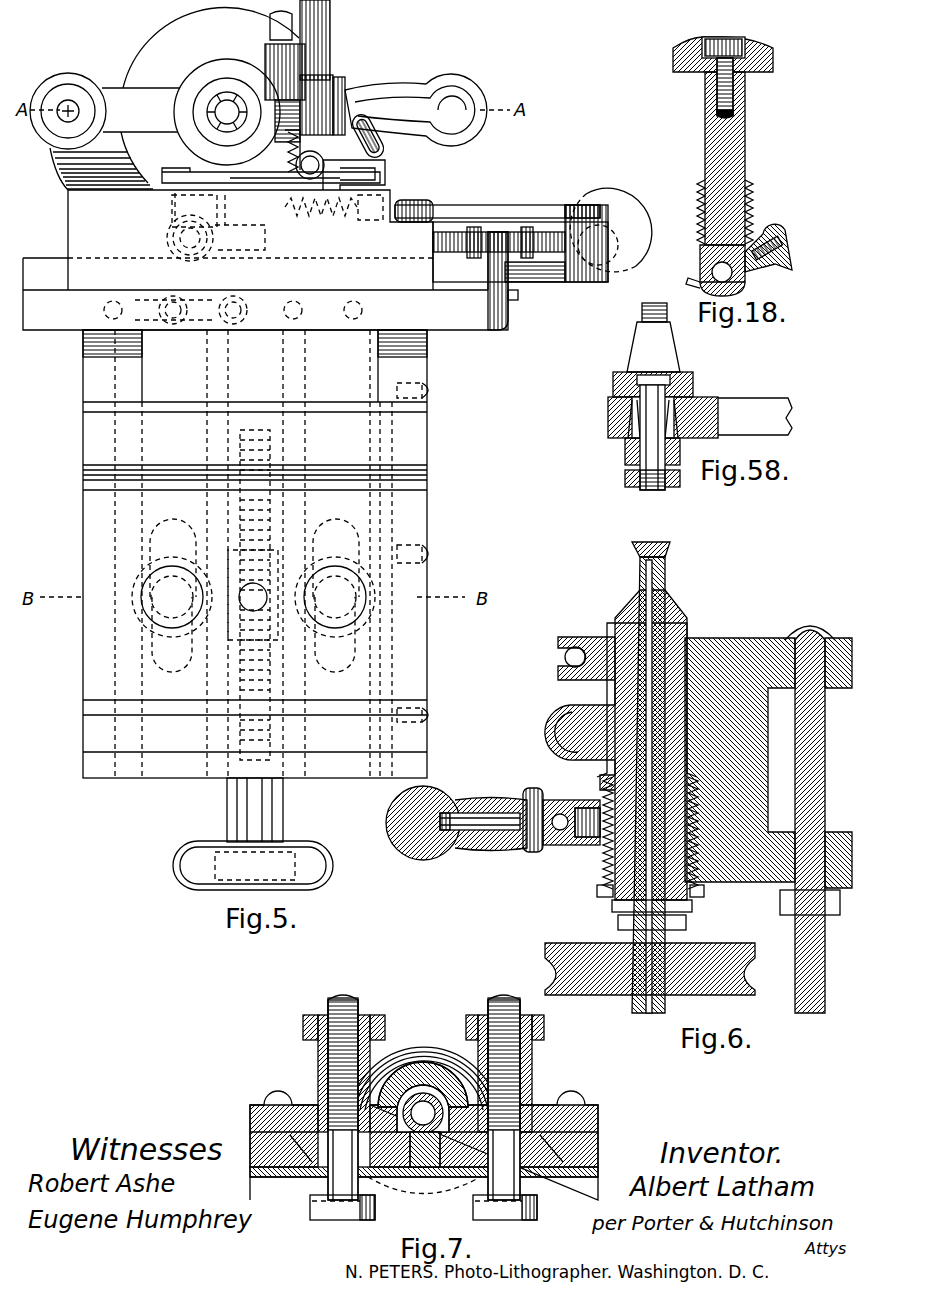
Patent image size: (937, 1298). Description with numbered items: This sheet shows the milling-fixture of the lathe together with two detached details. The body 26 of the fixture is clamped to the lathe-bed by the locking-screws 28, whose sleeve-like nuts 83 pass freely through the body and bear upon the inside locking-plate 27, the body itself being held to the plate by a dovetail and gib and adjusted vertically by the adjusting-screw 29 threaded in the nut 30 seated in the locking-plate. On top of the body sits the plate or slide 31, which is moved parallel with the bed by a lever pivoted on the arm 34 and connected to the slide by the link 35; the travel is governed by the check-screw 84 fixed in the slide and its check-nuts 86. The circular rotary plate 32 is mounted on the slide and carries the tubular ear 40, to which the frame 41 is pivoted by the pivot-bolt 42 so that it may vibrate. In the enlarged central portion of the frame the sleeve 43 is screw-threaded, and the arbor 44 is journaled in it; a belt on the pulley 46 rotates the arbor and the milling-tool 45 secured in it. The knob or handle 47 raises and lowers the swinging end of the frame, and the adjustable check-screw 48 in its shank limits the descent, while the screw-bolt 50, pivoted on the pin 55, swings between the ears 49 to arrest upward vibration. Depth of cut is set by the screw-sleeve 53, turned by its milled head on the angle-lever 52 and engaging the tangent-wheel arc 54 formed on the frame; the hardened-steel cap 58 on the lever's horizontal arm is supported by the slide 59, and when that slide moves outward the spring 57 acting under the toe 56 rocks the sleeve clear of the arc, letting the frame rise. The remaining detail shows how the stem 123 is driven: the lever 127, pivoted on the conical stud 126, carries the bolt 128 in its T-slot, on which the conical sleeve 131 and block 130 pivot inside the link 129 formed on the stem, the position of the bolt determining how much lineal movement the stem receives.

In FIG. 5, the body of the milling-fixture 26 is at (255, 537).
In FIG. 7, the body of the milling-fixture 26 is at (422, 1144).
In FIG. 5, the locking-plate 27 is at (266, 595).
In FIG. 7, the locking-plate 27 is at (424, 1107).
In FIG. 5, the locking-screws 28 is at (253, 595).
In FIG. 7, the locking-screws 28 is at (423, 1207).
In FIG. 5, the adjusting-screw 29 is at (253, 834).
In FIG. 7, the nut 30 is at (424, 1188).
In FIG. 5, the plate or slide 31 is at (270, 260).
In FIG. 5, the circular rotary plate 32 is at (250, 240).
In FIG. 5, the arm 34 is at (520, 252).
In FIG. 5, the link 35 is at (497, 205).
In FIG. 5, the tubular ear 40 is at (101, 169).
In FIG. 5, the frame 41 is at (200, 95).
In FIG. 6, the frame 41 is at (768, 776).
In FIG. 5, the pivot-bolt 42 is at (68, 111).
In FIG. 6, the pivot-bolt 42 is at (817, 819).
In FIG. 6, the sleeve 43 is at (643, 853).
In FIG. 6, the arbor 44 is at (655, 745).
In FIG. 5, the milling-tool 45 is at (227, 112).
In FIG. 6, the milling-tool 45 is at (651, 768).
In FIG. 6, the pulley 46 is at (650, 959).
In FIG. 5, the knob or handle 47 is at (416, 110).
In FIG. 6, the knob or handle 47 is at (478, 808).
In FIG. 6, the adjustable check-screw 48 is at (561, 815).
In FIG. 5, the ears 49 is at (296, 139).
In FIG. 6, the ears 49 is at (560, 637).
In FIG. 6, the screw-bolt 50 is at (565, 657).
In FIG. 5, the angle-lever 52 is at (331, 5).
In FIG. 18, the angle-lever 52 is at (705, 252).
In FIG. 5, the screw-sleeve 53 is at (336, 88).
In FIG. 18, the screw-sleeve 53 is at (705, 104).
In FIG. 5, the tangent-wheel arc 54 is at (281, 152).
In FIG. 6, the tangent-wheel arc 54 is at (583, 740).
In FIG. 5, the pin 55 is at (310, 165).
In FIG. 18, the pin 55 is at (732, 279).
In FIG. 5, the toe 56 is at (285, 167).
In FIG. 18, the toe 56 is at (684, 278).
In FIG. 5, the spring 57 is at (271, 166).
In FIG. 5, the hardened-steel cap 58 is at (375, 135).
In FIG. 18, the hardened-steel cap 58 is at (776, 243).
In FIG. 5, the slide 59 is at (380, 178).
In FIG. 5, the sleeve-like nuts 83 is at (608, 235).
In FIG. 7, the sleeve-like nuts 83 is at (423, 1097).
In FIG. 5, the check-screw 84 is at (499, 234).
In FIG. 5, the check-nuts 86 is at (527, 226).
In FIG. 58, the stem 123 is at (755, 416).
In FIG. 58, the conical stud 126 is at (636, 311).
In FIG. 58, the lever 127 is at (641, 359).
In FIG. 58, the bolt 128 is at (654, 447).
In FIG. 58, the link 129 is at (653, 417).
In FIG. 58, the block 130 is at (630, 445).
In FIG. 58, the conical sleeve 131 is at (672, 445).